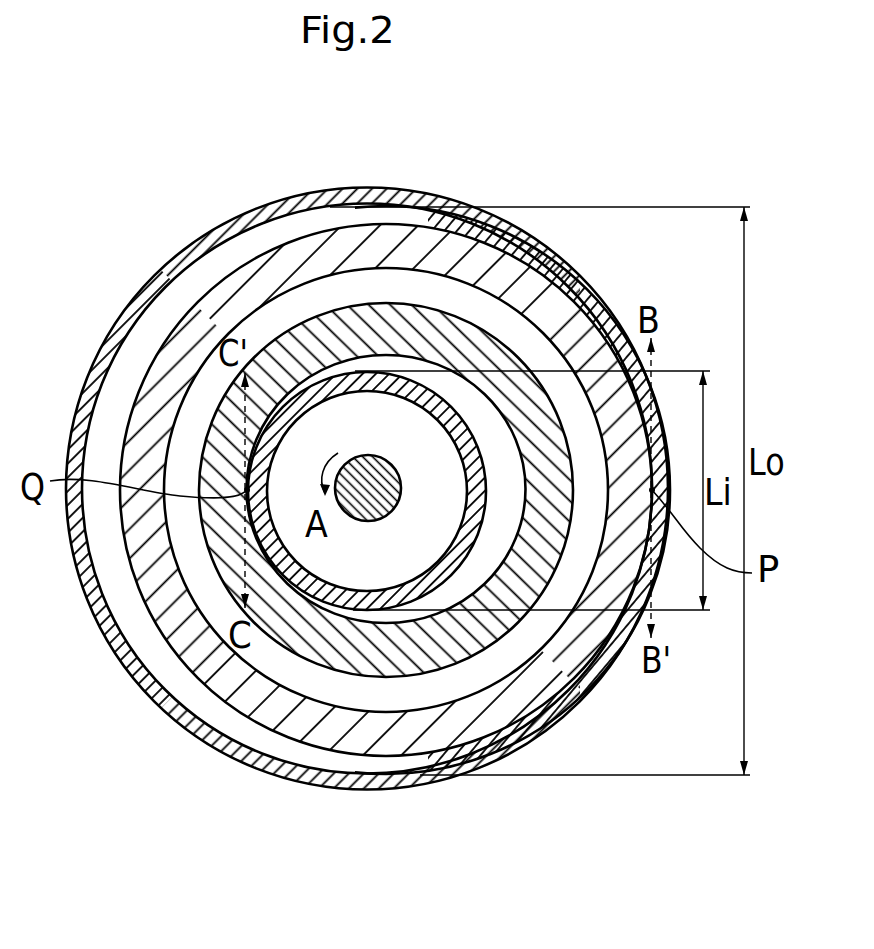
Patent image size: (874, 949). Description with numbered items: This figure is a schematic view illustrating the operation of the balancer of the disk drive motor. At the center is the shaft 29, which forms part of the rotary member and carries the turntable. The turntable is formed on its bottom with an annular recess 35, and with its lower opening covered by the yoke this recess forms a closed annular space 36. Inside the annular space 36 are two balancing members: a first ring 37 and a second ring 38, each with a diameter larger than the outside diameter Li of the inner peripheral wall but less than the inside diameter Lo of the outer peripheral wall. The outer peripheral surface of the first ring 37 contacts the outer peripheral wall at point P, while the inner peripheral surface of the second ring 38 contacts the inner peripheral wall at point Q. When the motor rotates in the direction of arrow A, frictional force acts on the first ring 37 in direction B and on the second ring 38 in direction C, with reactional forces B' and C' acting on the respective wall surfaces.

The shaft 29 is at (382, 508).
The annular recess 35 is at (112, 597).
The annular space 36 is at (170, 292).
The first ring 37 is at (150, 362).
The second ring 38 is at (498, 355).